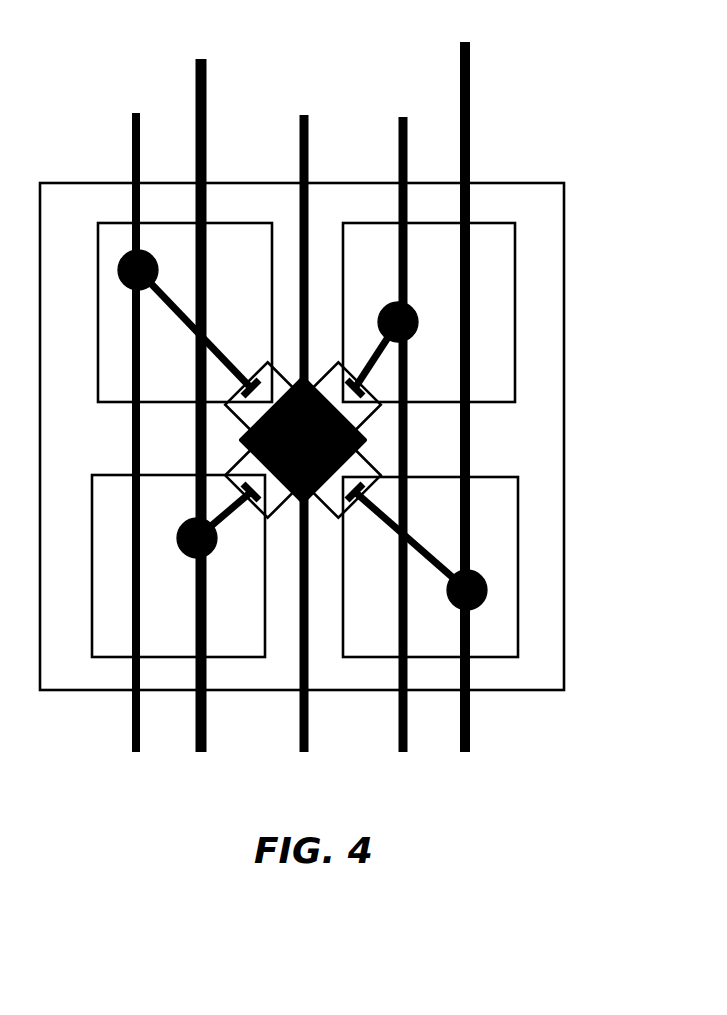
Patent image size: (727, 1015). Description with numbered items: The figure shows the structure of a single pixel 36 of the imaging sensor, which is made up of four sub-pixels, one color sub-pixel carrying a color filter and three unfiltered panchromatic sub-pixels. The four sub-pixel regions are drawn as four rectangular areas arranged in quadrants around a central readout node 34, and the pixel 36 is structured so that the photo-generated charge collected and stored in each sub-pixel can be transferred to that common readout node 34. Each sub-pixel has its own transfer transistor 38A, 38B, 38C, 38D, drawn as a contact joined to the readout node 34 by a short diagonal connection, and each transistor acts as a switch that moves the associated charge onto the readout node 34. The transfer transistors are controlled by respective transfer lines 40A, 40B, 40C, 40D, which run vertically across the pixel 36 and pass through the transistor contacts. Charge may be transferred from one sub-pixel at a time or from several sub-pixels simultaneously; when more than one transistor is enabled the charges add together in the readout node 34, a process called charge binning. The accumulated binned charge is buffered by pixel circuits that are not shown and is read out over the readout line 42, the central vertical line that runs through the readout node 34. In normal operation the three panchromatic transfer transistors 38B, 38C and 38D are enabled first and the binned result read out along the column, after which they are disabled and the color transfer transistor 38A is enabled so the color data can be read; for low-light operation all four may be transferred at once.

The readout node 34 is at (363, 437).
The pixel 36 is at (567, 227).
The transfer transistor 38A is at (262, 368).
The transfer transistor 38B is at (350, 372).
The transfer transistor 38C is at (253, 507).
The transfer transistor 38D is at (353, 505).
The transfer line 40A is at (132, 160).
The transfer line 40B is at (397, 160).
The transfer line 40C is at (194, 87).
The transfer line 40D is at (459, 73).
The readout line 42 is at (298, 148).